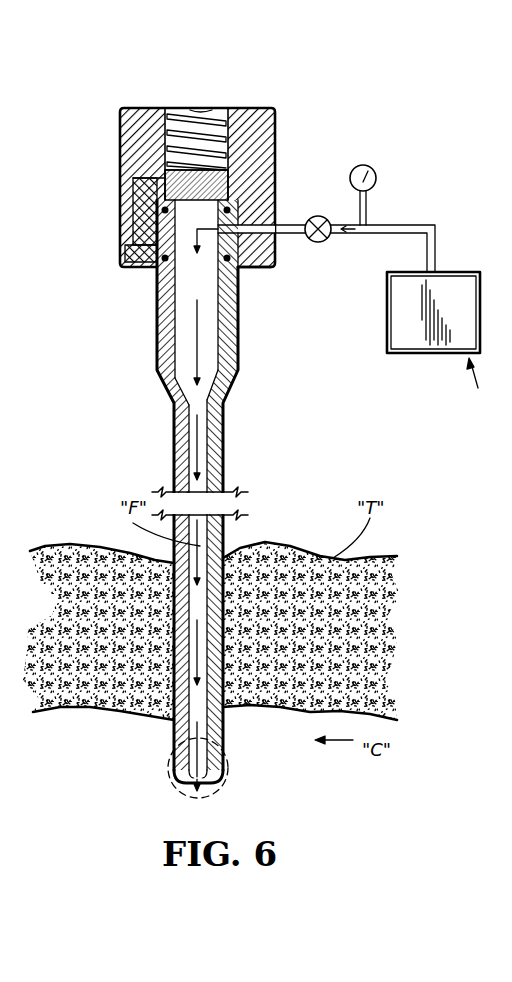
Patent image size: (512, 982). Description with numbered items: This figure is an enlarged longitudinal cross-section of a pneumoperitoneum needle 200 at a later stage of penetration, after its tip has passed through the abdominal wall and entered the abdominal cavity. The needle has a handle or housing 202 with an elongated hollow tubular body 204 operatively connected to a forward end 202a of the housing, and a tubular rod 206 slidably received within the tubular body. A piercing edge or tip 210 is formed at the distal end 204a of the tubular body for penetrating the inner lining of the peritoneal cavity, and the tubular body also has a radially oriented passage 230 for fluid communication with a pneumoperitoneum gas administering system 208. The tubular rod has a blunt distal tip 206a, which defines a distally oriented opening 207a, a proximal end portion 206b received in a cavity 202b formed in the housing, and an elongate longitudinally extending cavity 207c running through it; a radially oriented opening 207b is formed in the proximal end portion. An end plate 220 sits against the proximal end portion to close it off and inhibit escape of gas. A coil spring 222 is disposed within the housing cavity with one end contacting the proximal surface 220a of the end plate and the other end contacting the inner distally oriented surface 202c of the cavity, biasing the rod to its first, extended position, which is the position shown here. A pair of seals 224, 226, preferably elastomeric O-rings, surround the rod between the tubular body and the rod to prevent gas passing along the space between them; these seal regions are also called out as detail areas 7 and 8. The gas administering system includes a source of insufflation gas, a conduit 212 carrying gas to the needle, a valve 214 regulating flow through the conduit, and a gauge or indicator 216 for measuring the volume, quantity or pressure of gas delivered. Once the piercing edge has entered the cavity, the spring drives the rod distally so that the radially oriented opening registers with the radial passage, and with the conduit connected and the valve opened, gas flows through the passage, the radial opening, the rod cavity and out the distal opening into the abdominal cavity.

The pneumoperitoneum needle 200 is at (95, 116).
The handle or housing 202 is at (284, 118).
The forward end of housing 202a is at (263, 272).
The cavity 202b is at (212, 128).
The inner distally oriented surface of cavity 202c is at (210, 107).
The elongated hollow tubular body 204 is at (229, 463).
The distal end of tubular body 204a is at (160, 745).
The tubular rod 206 is at (210, 315).
The blunt distal tip 206a is at (215, 770).
The proximal end portion 206b is at (215, 363).
The opening 207a is at (212, 790).
The radially oriented opening 207b is at (273, 192).
The longitudinally extending cavity 207c is at (183, 350).
The pneumoperitoneum gas administering system 208 is at (422, 134).
The piercing edge or tip 210 is at (165, 785).
The conduit 212 is at (432, 225).
The valve 214 is at (326, 218).
The gauge or indicator 216 is at (378, 178).
The end plate 220 is at (133, 180).
The proximal surface of end plate 220a is at (178, 112).
The coil spring 222 is at (185, 127).
The seal 224 is at (150, 254).
The seal 226 is at (150, 205).
The radially oriented passage 230 is at (277, 202).
The detail area of FIG. 7 is at (153, 273).
The detail area of FIG. 8 is at (165, 777).